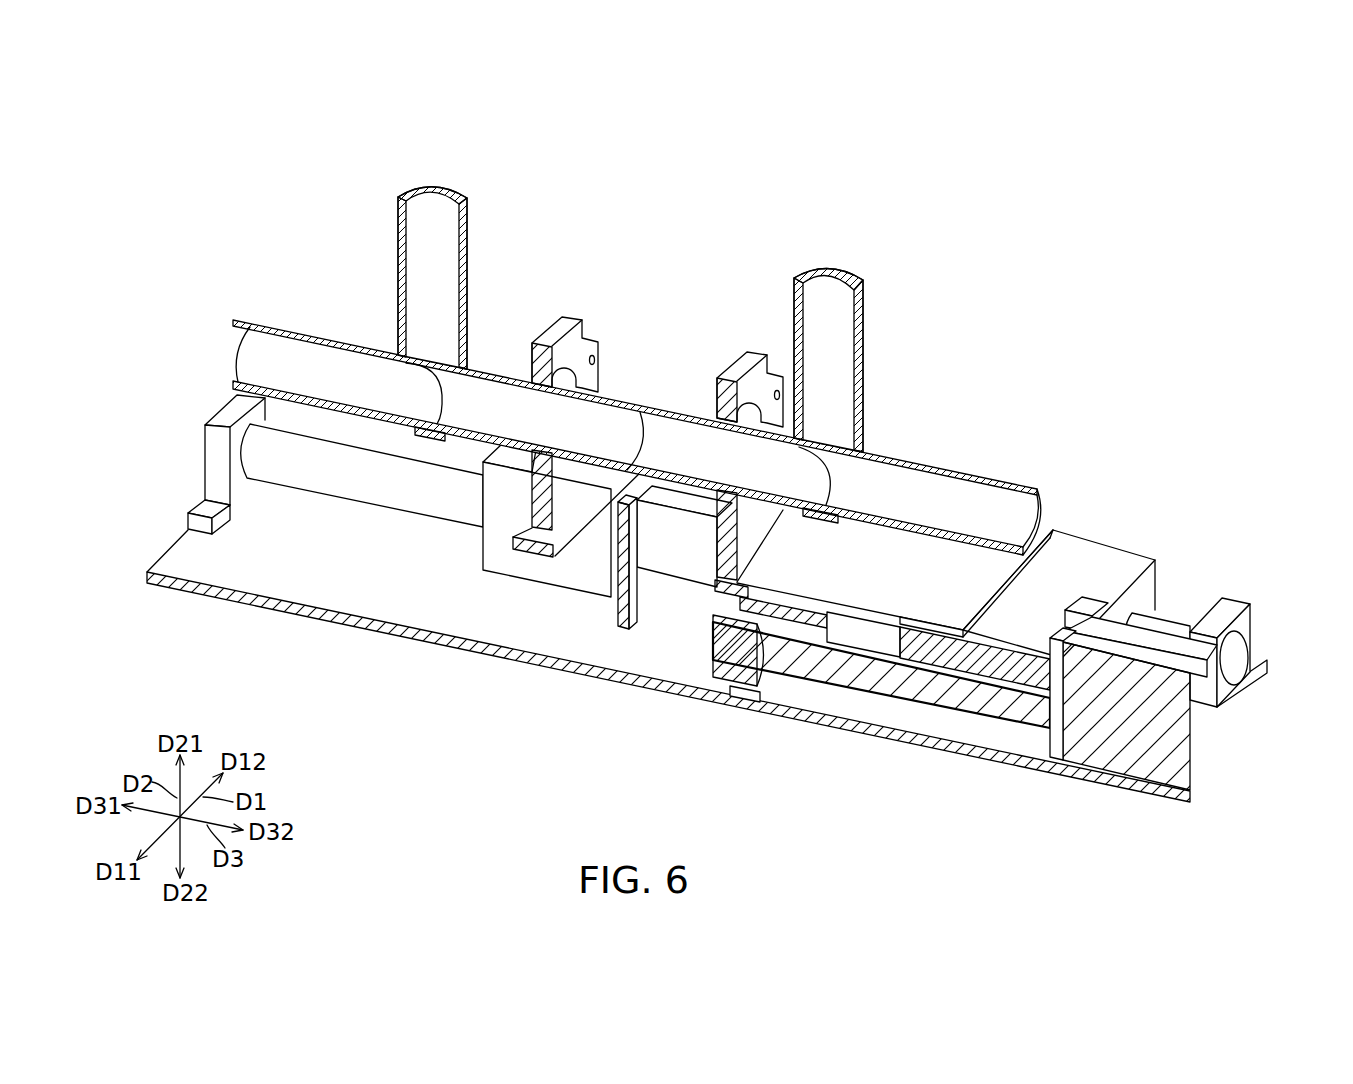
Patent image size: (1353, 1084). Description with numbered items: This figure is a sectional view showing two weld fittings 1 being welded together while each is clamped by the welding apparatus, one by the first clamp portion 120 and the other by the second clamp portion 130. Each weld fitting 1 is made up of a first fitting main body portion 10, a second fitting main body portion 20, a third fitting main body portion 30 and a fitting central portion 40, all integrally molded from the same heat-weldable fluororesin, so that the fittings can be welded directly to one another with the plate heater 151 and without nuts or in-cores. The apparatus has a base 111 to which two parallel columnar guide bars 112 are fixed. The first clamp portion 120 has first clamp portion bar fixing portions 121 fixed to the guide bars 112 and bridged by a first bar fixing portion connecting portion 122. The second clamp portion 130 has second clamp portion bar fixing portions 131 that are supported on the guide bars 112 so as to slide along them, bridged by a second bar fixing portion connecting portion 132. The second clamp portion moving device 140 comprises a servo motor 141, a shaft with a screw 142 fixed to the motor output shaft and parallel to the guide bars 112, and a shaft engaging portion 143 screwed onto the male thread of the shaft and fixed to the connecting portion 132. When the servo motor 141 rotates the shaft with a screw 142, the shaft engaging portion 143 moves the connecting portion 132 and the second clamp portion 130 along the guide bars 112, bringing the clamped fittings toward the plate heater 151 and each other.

The weld fitting 1 is at (739, 453).
The first fitting main body portion 10 is at (289, 318).
The second fitting main body portion 20 is at (611, 382).
The third fitting main body portion 30 is at (446, 166).
The fitting central portion 40 is at (422, 452).
The base 111 is at (662, 690).
The guide bars 112 is at (313, 482).
The first clamp portion 120 is at (569, 300).
The first clamp portion bar fixing portions 121 is at (578, 583).
The first bar fixing portion connecting portion 122 is at (516, 545).
The second clamp portion 130 is at (754, 329).
The second clamp portion bar fixing portions 131 is at (878, 645).
The second bar fixing portion connecting portion 132 is at (803, 588).
The second clamp portion moving device 140 is at (1242, 758).
The servo motor 141 is at (1200, 763).
The shaft with a screw 142 is at (940, 710).
The shaft engaging portion 143 is at (725, 605).
The plate heater 151 is at (623, 623).